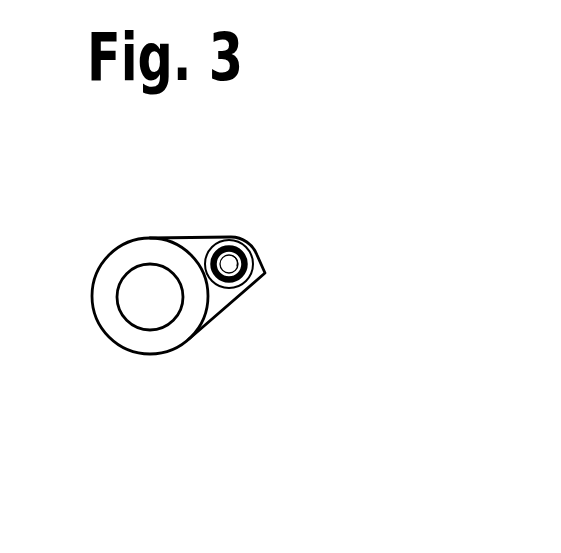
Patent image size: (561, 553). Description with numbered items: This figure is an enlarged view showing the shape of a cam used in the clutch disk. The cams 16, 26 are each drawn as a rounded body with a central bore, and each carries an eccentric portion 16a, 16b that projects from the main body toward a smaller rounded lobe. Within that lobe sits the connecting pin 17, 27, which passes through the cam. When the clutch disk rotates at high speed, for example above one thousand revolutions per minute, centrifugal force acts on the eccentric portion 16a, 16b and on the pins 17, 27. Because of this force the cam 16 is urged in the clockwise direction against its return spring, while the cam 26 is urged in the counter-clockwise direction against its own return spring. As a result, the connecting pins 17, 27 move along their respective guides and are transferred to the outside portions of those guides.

The cam 16 is at (160, 346).
The cam 26 is at (168, 356).
The eccentric portion 16a is at (217, 242).
The roller housing portion 16b is at (202, 240).
The pin 17 is at (286, 298).
The pin 27 is at (232, 268).